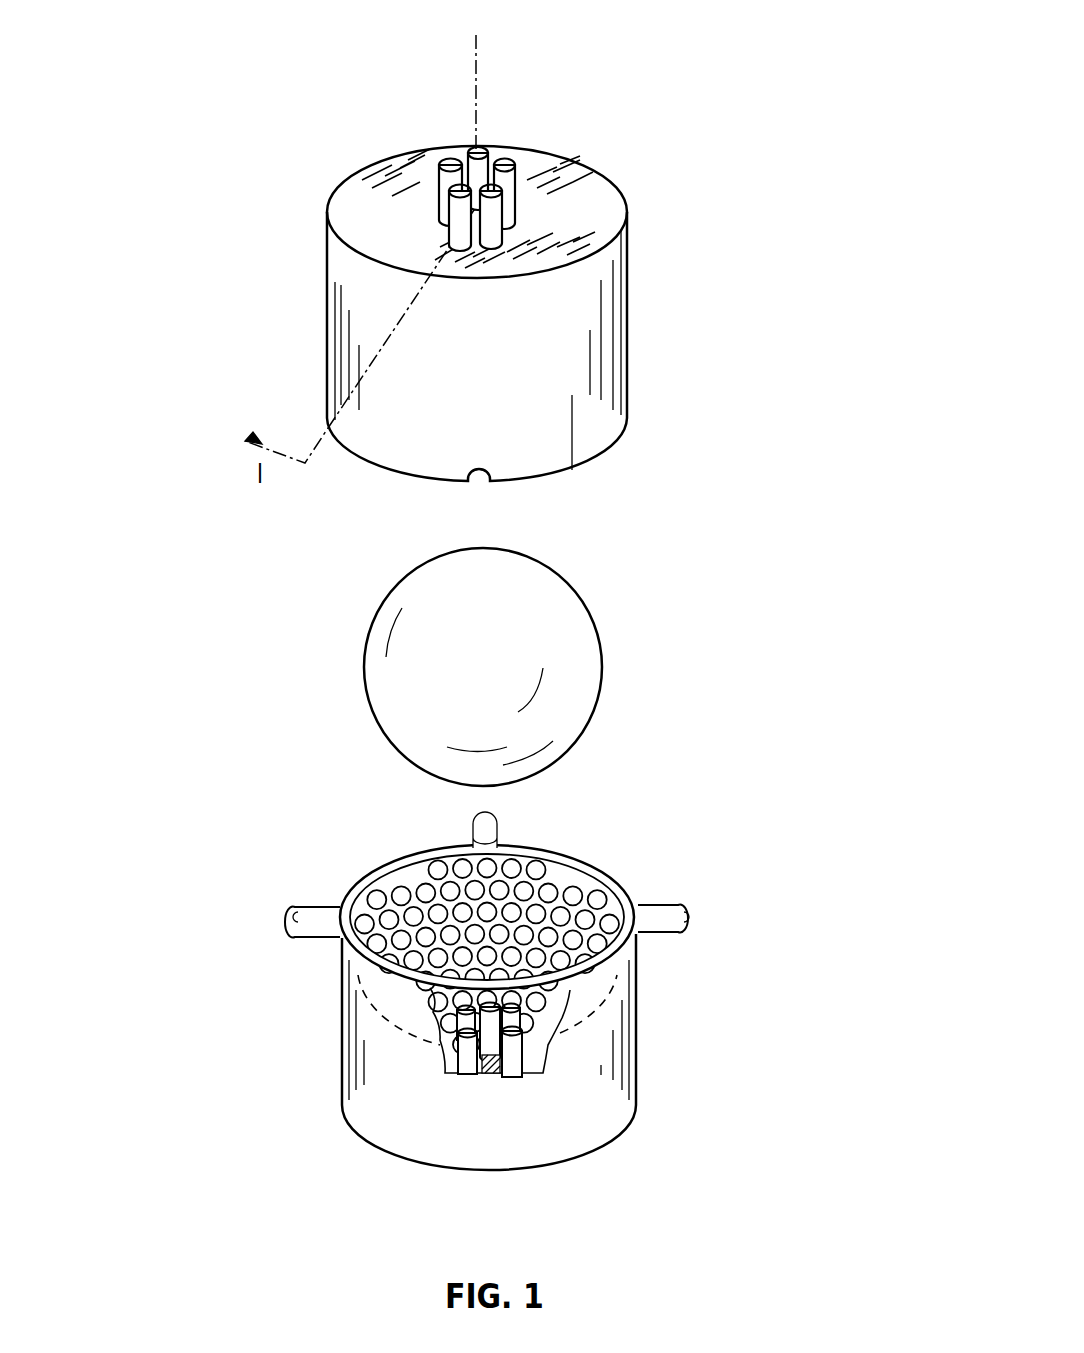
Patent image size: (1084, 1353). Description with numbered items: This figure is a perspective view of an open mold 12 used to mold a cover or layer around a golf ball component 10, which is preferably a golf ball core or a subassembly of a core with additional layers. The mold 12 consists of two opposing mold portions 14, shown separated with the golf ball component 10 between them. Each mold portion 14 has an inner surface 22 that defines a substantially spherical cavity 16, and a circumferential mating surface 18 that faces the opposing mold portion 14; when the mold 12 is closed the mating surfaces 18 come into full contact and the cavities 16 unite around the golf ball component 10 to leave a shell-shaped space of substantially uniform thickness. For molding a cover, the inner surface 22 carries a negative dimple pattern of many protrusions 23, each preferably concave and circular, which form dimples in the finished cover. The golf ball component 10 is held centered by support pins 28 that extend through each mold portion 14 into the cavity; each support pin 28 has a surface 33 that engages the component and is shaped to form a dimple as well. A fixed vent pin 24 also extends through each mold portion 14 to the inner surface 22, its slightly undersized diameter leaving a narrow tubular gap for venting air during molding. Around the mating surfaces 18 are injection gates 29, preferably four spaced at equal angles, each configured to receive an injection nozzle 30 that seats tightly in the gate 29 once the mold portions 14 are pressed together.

The golf ball component 10 is at (588, 648).
The mold 12 is at (720, 155).
The mold portion 14 is at (615, 345).
The cavity 16 is at (403, 832).
The mating surface 18 is at (600, 872).
The inner surface 22 is at (407, 893).
The protrusion 23 is at (513, 868).
The vent pin 24 is at (473, 185).
The support pin 28 is at (447, 207).
The injection gate 29 is at (480, 483).
The injection nozzle 30 is at (668, 908).
The surface of support pin 33 is at (542, 1076).